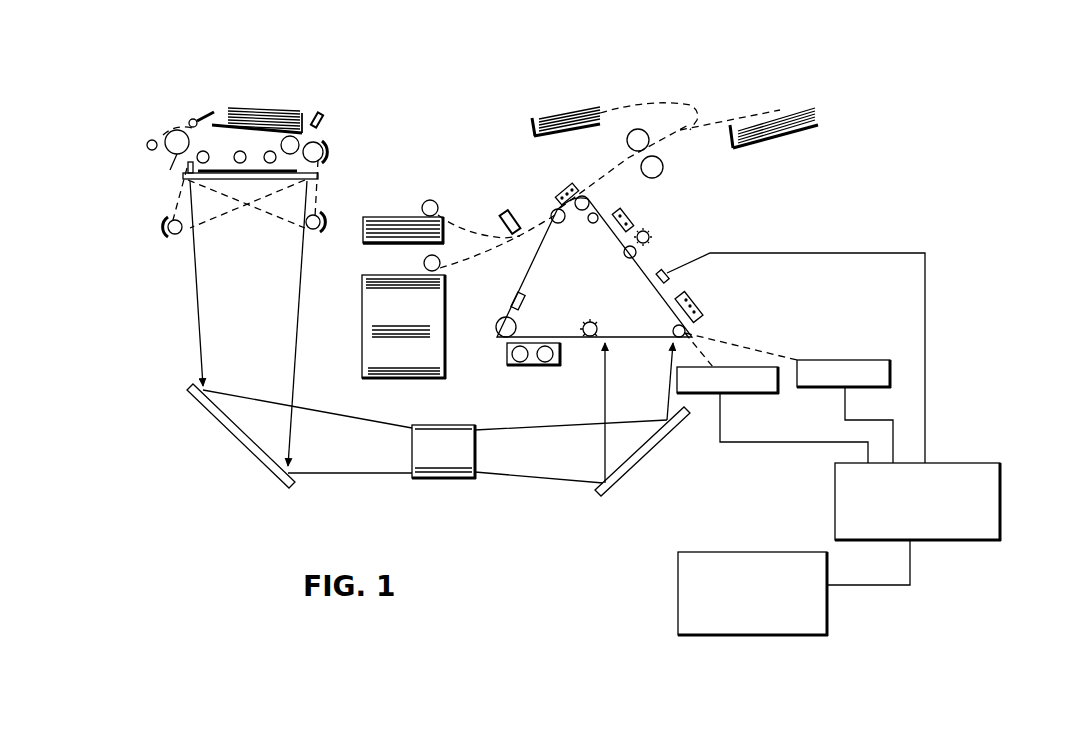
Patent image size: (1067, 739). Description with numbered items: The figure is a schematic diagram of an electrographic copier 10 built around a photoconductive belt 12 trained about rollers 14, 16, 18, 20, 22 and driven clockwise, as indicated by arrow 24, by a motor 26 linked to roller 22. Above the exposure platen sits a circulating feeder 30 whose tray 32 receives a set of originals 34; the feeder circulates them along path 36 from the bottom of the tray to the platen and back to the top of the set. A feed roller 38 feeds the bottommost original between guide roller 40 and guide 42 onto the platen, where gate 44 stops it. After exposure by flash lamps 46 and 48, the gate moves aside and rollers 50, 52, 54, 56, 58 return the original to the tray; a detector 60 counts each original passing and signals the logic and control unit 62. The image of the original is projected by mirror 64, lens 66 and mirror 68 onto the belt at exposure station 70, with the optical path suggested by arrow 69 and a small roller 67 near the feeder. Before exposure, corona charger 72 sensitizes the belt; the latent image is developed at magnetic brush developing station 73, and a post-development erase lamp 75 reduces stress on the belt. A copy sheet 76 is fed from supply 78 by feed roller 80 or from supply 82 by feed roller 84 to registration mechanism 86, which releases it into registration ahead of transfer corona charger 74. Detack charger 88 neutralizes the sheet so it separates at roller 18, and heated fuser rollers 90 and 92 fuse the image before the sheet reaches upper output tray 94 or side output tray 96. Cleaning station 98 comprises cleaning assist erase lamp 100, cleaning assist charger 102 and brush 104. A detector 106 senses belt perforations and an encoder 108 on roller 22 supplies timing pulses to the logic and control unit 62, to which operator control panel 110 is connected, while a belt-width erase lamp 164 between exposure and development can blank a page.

The electrographic copier 10 is at (433, 150).
The photoconductive belt 12 is at (523, 267).
The roller 14 is at (517, 328).
The roller 16 is at (558, 224).
The roller 18 is at (580, 212).
The roller 20 is at (632, 258).
The roller 22 is at (674, 330).
The arrow 24 is at (662, 300).
The motor 26 is at (877, 358).
The circulating feeder 30 is at (227, 103).
The tray 32 is at (301, 112).
The originals 34 is at (241, 107).
The path 36 is at (166, 132).
The feed roller 38 is at (289, 135).
The guide roller 40 is at (327, 152).
The guide 42 is at (326, 142).
The gate 44 is at (183, 175).
The flash lamp 46 is at (175, 236).
The flash lamp 48 is at (320, 215).
The roller 50 is at (269, 150).
The roller 52 is at (239, 151).
The roller 54 is at (204, 150).
The roller 56 is at (175, 154).
The roller 58 is at (147, 145).
The detector 60 is at (327, 108).
The logic and control unit 62 is at (1003, 498).
The mirror 64 is at (268, 468).
The lens 66 is at (466, 480).
The roller 67 is at (190, 120).
The mirror 68 is at (653, 443).
The optical path 69 is at (392, 490).
The exposure station 70 is at (633, 343).
The corona charger 72 is at (702, 310).
The magnetic brush developing station 73 is at (532, 370).
The transfer corona charger 74 is at (552, 201).
The post-development erase lamp 75 is at (525, 302).
The copy sheet 76 is at (392, 216).
The supply 78 is at (362, 240).
The feed roller 80 is at (432, 200).
The supply 82 is at (368, 350).
The feed roller 84 is at (424, 263).
The registration mechanism 86 is at (503, 213).
The detack charger 88 is at (575, 185).
The fuser roller 90 is at (627, 142).
The fuser roller 92 is at (660, 167).
The upper output tray 94 is at (533, 134).
The side output tray 96 is at (753, 147).
The cleaning station 98 is at (606, 206).
The cleaning assist erase lamp 100 is at (596, 226).
The cleaning assist charger 102 is at (637, 213).
The brush 104 is at (652, 237).
The detector 106 is at (680, 278).
The encoder 108 is at (765, 395).
The operator control panel 110 is at (740, 640).
The erase lamp 164 is at (593, 322).